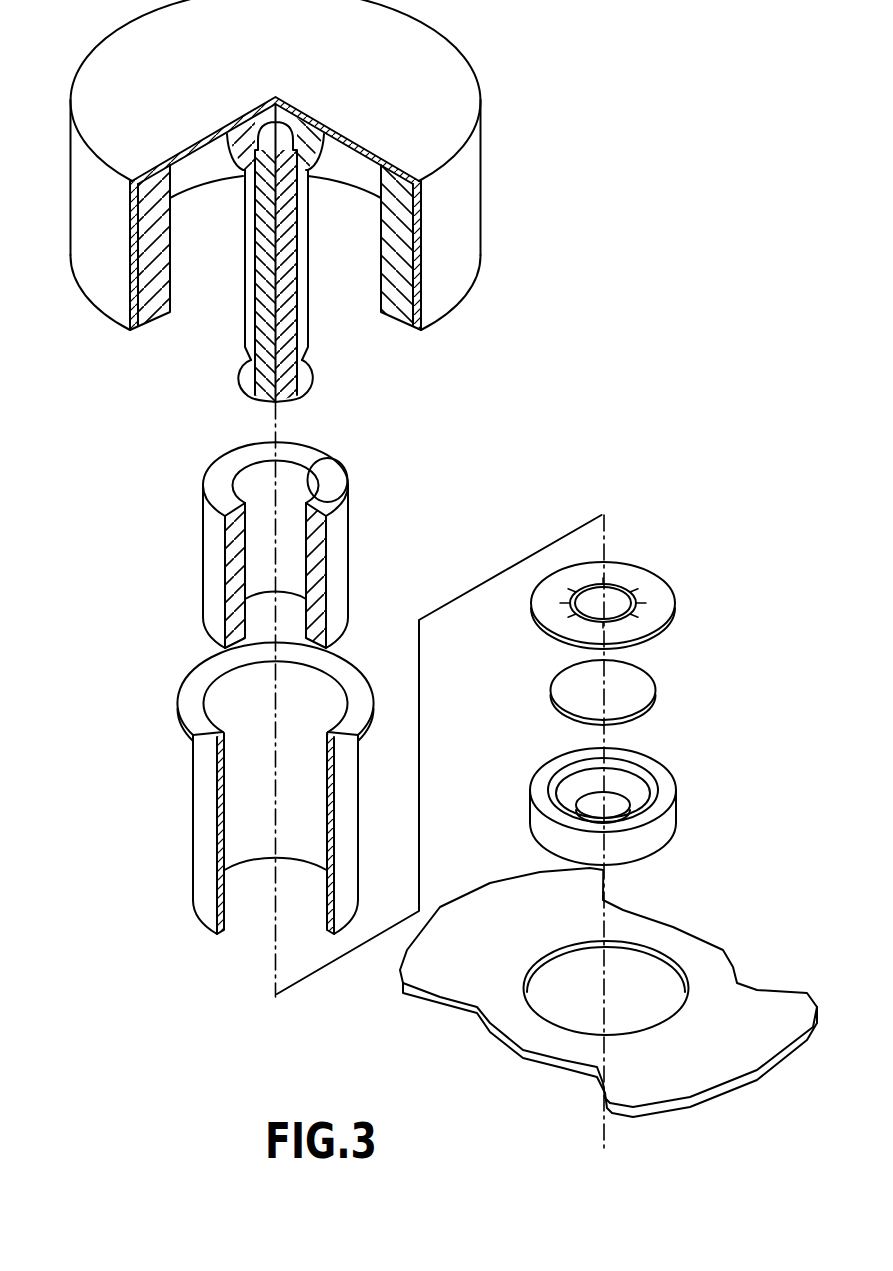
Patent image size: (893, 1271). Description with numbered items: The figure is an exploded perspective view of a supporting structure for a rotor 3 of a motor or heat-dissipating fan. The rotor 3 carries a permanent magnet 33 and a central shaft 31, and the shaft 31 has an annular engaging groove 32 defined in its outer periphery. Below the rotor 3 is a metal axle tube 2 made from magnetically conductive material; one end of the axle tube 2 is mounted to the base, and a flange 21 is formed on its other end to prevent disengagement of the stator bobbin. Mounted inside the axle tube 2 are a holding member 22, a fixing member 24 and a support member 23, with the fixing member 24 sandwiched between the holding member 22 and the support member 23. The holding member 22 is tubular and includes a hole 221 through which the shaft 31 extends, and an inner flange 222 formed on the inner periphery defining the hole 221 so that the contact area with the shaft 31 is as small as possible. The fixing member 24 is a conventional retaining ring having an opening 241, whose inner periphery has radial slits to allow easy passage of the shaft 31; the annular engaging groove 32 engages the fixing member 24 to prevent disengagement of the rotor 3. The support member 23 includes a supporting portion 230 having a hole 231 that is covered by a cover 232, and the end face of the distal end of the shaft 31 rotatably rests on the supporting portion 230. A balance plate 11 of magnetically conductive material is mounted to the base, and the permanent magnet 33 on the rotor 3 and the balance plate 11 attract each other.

The rotor 3 is at (473, 210).
The permanent magnet 33 is at (150, 308).
The shaft 31 is at (300, 283).
The annular engaging groove 32 is at (303, 362).
The metal axle tube 2 is at (202, 845).
The flange 21 is at (357, 677).
The holding member 22 is at (342, 530).
The hole 221 is at (253, 558).
The inner flange 222 is at (333, 460).
The support member 23 is at (670, 830).
The supporting portion 230 is at (563, 797).
The hole 231 is at (627, 813).
The cover 232 is at (650, 687).
The fixing member 24 is at (673, 590).
The opening 241 is at (627, 590).
The balance plate 11 is at (717, 963).